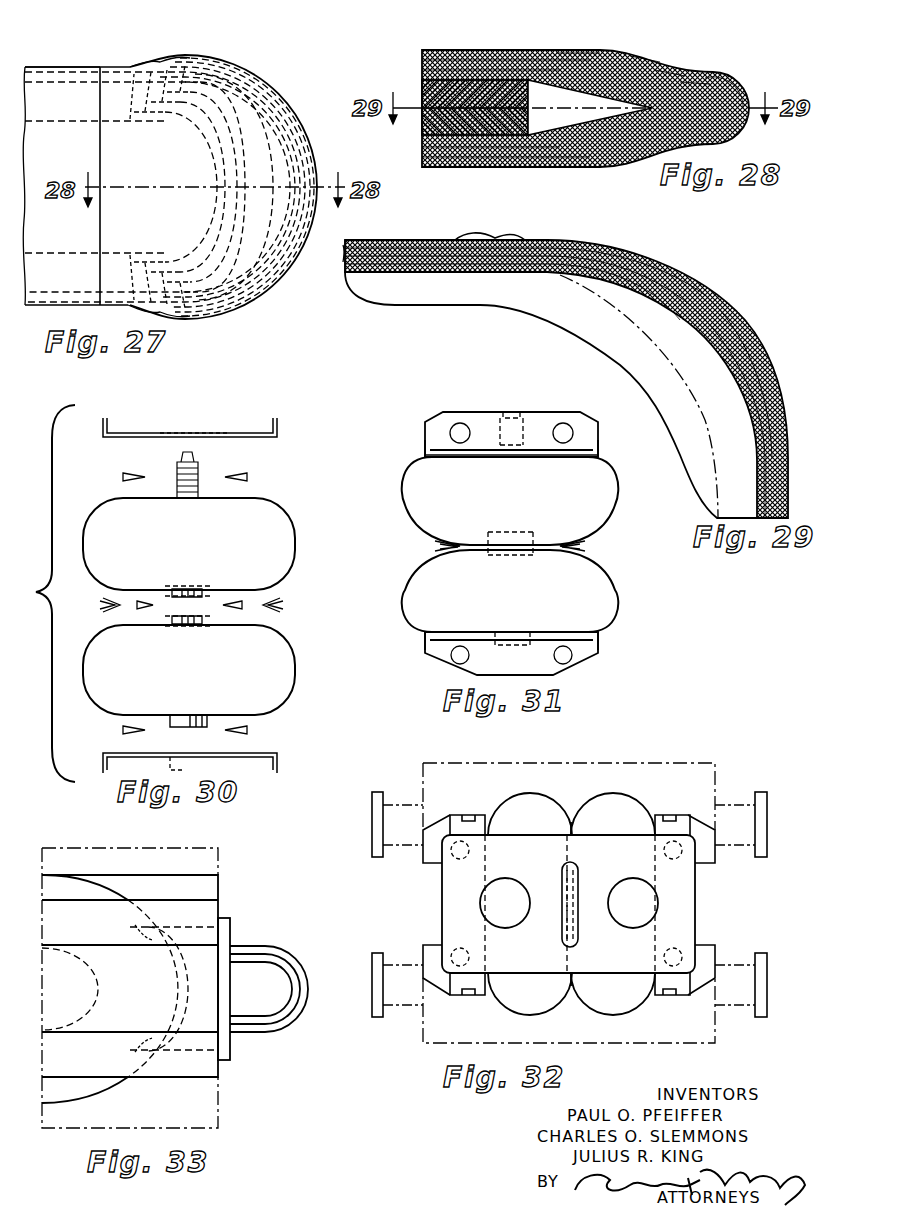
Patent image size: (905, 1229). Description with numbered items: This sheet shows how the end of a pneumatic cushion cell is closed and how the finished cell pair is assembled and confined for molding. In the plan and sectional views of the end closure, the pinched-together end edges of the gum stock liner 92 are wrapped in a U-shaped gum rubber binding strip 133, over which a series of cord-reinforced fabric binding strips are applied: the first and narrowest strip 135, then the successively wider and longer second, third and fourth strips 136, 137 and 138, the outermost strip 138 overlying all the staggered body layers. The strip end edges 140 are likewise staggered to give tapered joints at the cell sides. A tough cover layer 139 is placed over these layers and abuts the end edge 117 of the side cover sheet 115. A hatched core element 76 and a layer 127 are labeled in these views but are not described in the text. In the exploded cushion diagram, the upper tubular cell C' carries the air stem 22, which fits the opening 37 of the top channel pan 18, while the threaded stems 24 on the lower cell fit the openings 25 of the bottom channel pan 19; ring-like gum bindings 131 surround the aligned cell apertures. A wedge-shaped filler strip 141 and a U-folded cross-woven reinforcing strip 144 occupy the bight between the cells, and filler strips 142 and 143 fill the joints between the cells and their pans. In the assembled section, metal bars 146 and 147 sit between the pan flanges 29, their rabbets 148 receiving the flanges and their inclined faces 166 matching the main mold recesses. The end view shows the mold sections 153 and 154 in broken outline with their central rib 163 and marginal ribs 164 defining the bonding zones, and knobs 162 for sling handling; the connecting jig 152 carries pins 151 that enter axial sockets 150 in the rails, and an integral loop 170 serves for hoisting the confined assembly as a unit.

In FIG. 30, the top channel pan 18 is at (226, 432).
In FIG. 31, the top channel pan 18 is at (478, 460).
In FIG. 30, the bottom channel pan 19 is at (243, 763).
In FIG. 31, the bottom channel pan 19 is at (479, 632).
In FIG. 30, the metal stem 22 is at (198, 478).
In FIG. 30, the threaded metal stems 24 is at (210, 720).
In FIG. 30, the openings 25 is at (172, 773).
In FIG. 31, the flanges 29 is at (425, 442).
In FIG. 30, the openings 37 is at (195, 430).
In FIG. 28, the bead core 76 is at (422, 88).
In FIG. 28, the gum stock liner 92 is at (582, 94).
In FIG. 29, the gum stock liner 92 is at (433, 274).
In FIG. 27, the cover sheet 115 is at (52, 67).
In FIG. 29, the cover sheet 115 is at (344, 258).
In FIG. 27, the end edge of side cover sheet 117 is at (100, 176).
In FIG. 29, the end edge of side cover sheet 117 is at (372, 240).
In FIG. 27, the ply layer 127 is at (33, 124).
In FIG. 30, the reinforced gum stock bindings 131 is at (183, 592).
In FIG. 27, the binding strip 133 is at (278, 100).
In FIG. 28, the binding strip 133 is at (740, 86).
In FIG. 29, the binding strip 133 is at (668, 310).
In FIG. 27, the first fabric binding strip 135 is at (250, 74).
In FIG. 28, the first fabric binding strip 135 is at (687, 80).
In FIG. 29, the first fabric binding strip 135 is at (662, 266).
In FIG. 27, the second fabric binding strip 136 is at (222, 68).
In FIG. 28, the second fabric binding strip 136 is at (661, 68).
In FIG. 29, the second fabric binding strip 136 is at (626, 258).
In FIG. 27, the third fabric binding strip 137 is at (173, 66).
In FIG. 28, the third fabric binding strip 137 is at (637, 52).
In FIG. 29, the third fabric binding strip 137 is at (602, 246).
In FIG. 27, the fourth fabric binding strip 138 is at (153, 64).
In FIG. 28, the fourth fabric binding strip 138 is at (556, 55).
In FIG. 29, the fourth fabric binding strip 138 is at (561, 242).
In FIG. 27, the cover layer 139 is at (110, 67).
In FIG. 28, the cover layer 139 is at (480, 50).
In FIG. 29, the cover layer 139 is at (682, 282).
In FIG. 29, the end edges of binding strips 140 is at (440, 238).
In FIG. 30, the filler strip 141 is at (235, 600).
In FIG. 30, the filler strip 142 is at (246, 474).
In FIG. 30, the filler strip 143 is at (120, 731).
In FIG. 30, the reinforcing strip 144 is at (270, 608).
In FIG. 31, the bar 146 is at (472, 413).
In FIG. 32, the bar 146 is at (442, 929).
In FIG. 33, the bar 146 is at (112, 1020).
In FIG. 31, the bar 147 is at (572, 676).
In FIG. 32, the bar 147 is at (700, 900).
In FIG. 31, the rabbets 148 is at (425, 656).
In FIG. 32, the rabbets 148 is at (466, 815).
In FIG. 33, the axial sockets 150 is at (135, 931).
In FIG. 32, the pins 151 is at (457, 866).
In FIG. 33, the pins 151 is at (155, 989).
In FIG. 33, the connecting members 152 is at (232, 942).
In FIG. 32, the mold section 153 is at (470, 763).
In FIG. 33, the mold section 153 is at (218, 879).
In FIG. 32, the mold section 154 is at (423, 1043).
In FIG. 33, the mold section 154 is at (218, 1122).
In FIG. 32, the knobs 162 is at (772, 792).
In FIG. 32, the central rib 163 is at (573, 842).
In FIG. 32, the marginal ribs 164 is at (492, 832).
In FIG. 31, the inclined faces 166 is at (436, 418).
In FIG. 32, the inclined faces 166 is at (690, 822).
In FIG. 32, the loops 170 is at (578, 935).
In FIG. 33, the loops 170 is at (292, 1022).
In FIG. 30, the upper tubular cell C' is at (206, 528).
In FIG. 31, the upper tubular cell C' is at (549, 517).